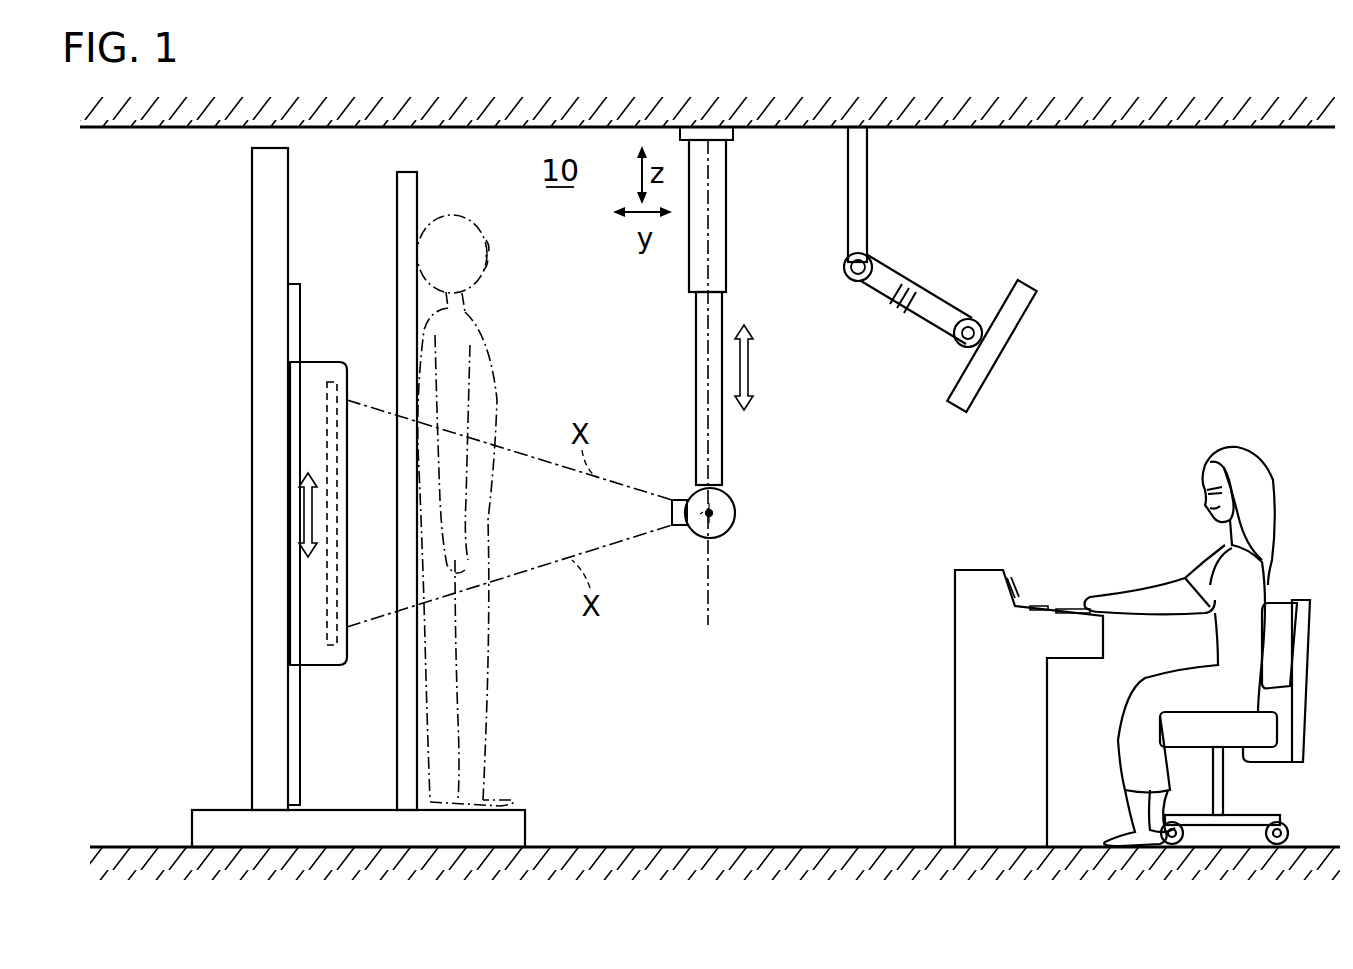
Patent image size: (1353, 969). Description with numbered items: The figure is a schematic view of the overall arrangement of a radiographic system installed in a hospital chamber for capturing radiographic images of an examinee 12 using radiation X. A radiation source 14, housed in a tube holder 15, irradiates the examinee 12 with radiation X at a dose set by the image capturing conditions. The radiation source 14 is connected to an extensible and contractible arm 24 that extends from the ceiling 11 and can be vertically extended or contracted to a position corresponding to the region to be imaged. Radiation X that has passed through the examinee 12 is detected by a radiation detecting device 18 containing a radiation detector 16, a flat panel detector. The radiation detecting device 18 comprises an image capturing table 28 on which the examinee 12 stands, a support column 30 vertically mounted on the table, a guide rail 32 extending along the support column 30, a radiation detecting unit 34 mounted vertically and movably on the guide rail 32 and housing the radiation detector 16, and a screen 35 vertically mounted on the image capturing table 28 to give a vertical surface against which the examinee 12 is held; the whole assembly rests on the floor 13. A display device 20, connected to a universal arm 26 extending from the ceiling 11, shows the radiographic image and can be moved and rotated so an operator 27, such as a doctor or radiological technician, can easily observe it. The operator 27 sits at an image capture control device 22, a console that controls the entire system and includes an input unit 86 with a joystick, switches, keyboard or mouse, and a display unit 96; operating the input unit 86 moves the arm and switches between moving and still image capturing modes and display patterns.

The ceiling 11 is at (1110, 127).
The examinee 12 is at (490, 253).
The floor 13 is at (891, 846).
The radiation source 14 is at (722, 520).
The tube holder 15 is at (729, 497).
The radiation detector 16 is at (330, 445).
The radiation detecting device 18 is at (205, 197).
The display device 20 is at (1005, 328).
The image capture control device 22 is at (968, 604).
The extensible and contractible arm 24 is at (723, 186).
The universal arm 26 is at (853, 238).
The operator 27 is at (1180, 646).
The image capturing table 28 is at (359, 826).
The support column 30 is at (265, 233).
The guide rail 32 is at (298, 338).
The radiation detecting unit 34 is at (308, 416).
The screen 35 is at (413, 185).
The input unit 86 is at (1062, 606).
The display unit 96 is at (1014, 588).